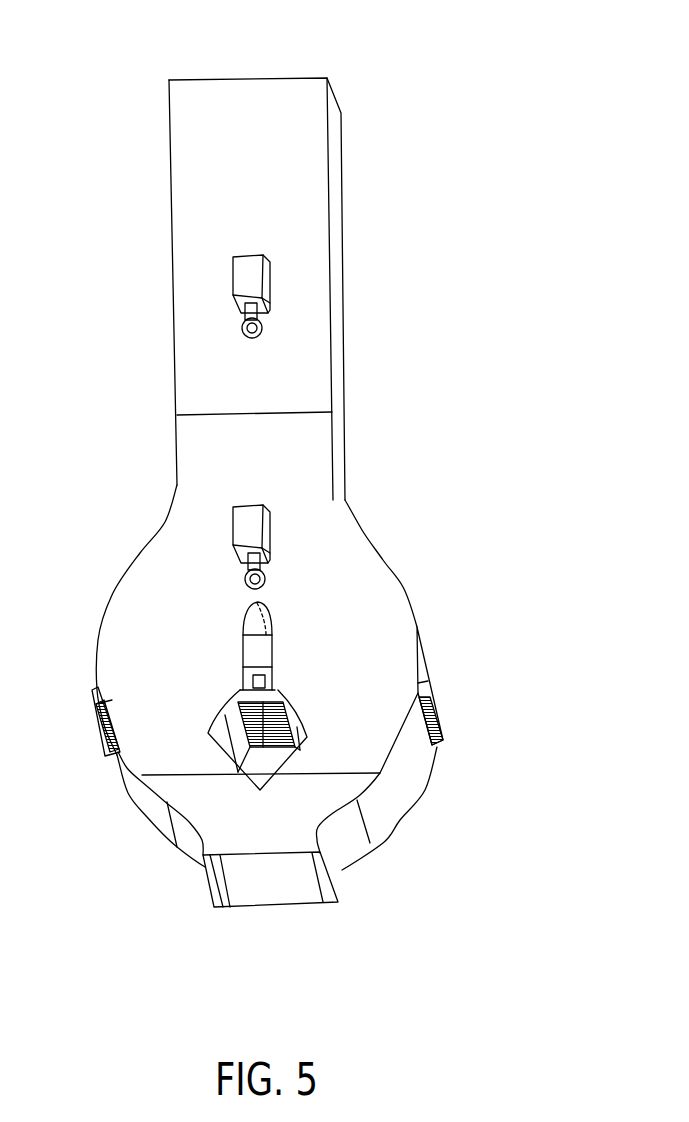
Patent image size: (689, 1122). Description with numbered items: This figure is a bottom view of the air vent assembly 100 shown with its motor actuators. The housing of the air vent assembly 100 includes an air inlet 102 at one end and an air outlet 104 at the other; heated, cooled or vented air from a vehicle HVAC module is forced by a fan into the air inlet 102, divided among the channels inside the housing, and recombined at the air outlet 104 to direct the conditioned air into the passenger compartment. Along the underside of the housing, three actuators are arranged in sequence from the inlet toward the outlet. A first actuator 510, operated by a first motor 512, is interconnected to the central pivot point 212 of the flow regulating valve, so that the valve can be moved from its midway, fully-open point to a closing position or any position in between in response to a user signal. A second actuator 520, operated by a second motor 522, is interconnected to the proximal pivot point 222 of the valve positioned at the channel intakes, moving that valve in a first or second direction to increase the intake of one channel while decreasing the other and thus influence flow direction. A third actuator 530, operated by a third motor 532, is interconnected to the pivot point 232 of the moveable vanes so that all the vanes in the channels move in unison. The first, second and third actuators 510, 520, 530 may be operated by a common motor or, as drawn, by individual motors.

The air vent assembly 100 is at (500, 103).
The air inlet 102 is at (258, 78).
The air outlet 104 is at (262, 893).
The first actuator 510 is at (262, 323).
The first motor 512 is at (253, 272).
The pivot point 212 is at (243, 332).
The second actuator 520 is at (265, 570).
The second motor 522 is at (255, 518).
The pivot point 222 is at (245, 578).
The third actuator 530 is at (268, 683).
The third motor 532 is at (265, 652).
The pivot point 232 is at (248, 697).